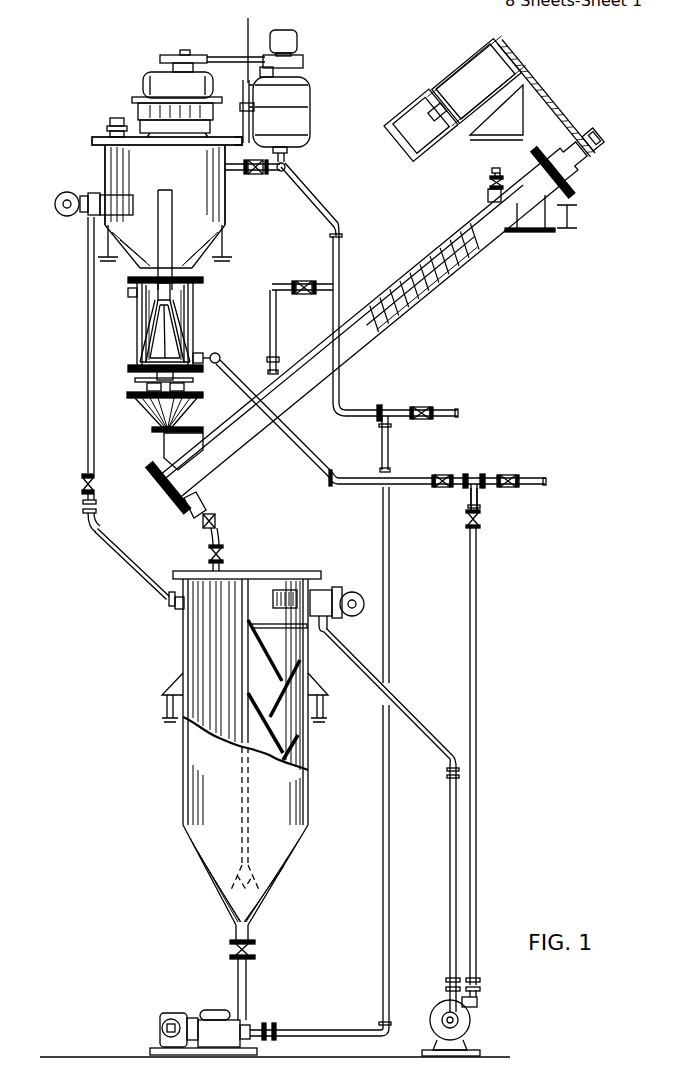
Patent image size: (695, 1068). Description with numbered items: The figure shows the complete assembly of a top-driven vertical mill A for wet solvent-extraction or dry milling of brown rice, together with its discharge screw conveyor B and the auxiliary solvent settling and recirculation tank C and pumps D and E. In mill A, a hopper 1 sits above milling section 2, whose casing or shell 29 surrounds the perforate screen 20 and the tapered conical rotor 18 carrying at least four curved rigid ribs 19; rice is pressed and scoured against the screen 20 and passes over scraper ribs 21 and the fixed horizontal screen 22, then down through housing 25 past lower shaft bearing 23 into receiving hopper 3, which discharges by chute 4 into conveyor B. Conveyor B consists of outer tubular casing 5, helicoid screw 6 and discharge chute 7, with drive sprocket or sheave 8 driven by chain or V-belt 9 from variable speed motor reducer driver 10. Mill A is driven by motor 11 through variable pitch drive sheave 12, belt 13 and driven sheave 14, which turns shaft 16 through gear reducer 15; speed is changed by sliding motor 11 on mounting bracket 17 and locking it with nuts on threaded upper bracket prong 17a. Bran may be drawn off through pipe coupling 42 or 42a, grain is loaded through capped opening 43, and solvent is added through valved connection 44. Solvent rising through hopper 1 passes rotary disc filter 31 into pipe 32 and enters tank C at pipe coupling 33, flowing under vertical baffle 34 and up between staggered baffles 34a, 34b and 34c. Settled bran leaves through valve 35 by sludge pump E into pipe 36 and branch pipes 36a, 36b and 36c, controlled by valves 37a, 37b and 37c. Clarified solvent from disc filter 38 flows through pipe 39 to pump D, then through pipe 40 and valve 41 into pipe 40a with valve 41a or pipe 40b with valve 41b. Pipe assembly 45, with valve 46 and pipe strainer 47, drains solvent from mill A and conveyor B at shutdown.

The hopper 1 is at (227, 218).
The milling section 2 is at (186, 297).
The receiving hopper 3 is at (197, 411).
The chute 4 is at (163, 441).
The outer tubular casing 5 is at (442, 250).
The helicoid screw 6 is at (453, 264).
The discharge chute 7 is at (535, 226).
The drive sprocket or sheave 8 is at (605, 142).
The chain or V-belt 9 is at (565, 112).
The variable speed motor reducer driver 10 is at (445, 70).
The motor 11 is at (312, 103).
The variable pitch drive sheave 12 is at (300, 55).
The belt 13 is at (240, 57).
The driven sheave 14 is at (178, 53).
The gear reducer 15 is at (143, 82).
The shaft 16 is at (134, 194).
The mounting bracket 17 is at (242, 88).
The threaded upper bracket prong 17a is at (248, 20).
The tapered conical rotor 18 is at (137, 346).
The curved rigid ribs 19 is at (180, 312).
The perforate screen 20 is at (186, 332).
The scraper ribs 21 is at (137, 378).
The horizontal screen 22 is at (196, 381).
The lower shaft bearing 23 is at (143, 404).
The housing 25 is at (130, 396).
The casing or shell 29 is at (137, 322).
The rotary disc filter 31 is at (57, 200).
The pipe 32 is at (88, 362).
The pipe coupling 33 is at (173, 609).
The vertical baffle 34 is at (242, 645).
The staggered baffle 34a is at (284, 682).
The staggered baffle 34b is at (300, 690).
The staggered baffle 34c is at (270, 612).
The valve 35 is at (258, 948).
The pipe 36 is at (390, 872).
The branch pipe 36a is at (405, 410).
The branch pipe 36b is at (318, 282).
The branch pipe 36c is at (310, 203).
The valve 37a is at (425, 408).
The valve 37b is at (305, 296).
The valve 37c is at (256, 175).
The disc filter 38 is at (335, 590).
The pipe 39 is at (404, 711).
The pipe 40 is at (478, 702).
The pipe 40a is at (491, 452).
The pipe 40b is at (468, 500).
The valve 41 is at (480, 517).
The valve 41a is at (510, 474).
The valve 41b is at (442, 474).
The pipe coupling 42 is at (207, 355).
The pipe coupling 42a is at (132, 296).
The capped opening 43 is at (108, 127).
The valved connection 44 is at (490, 181).
The pipe assembly 45 is at (217, 520).
The valve 46 is at (222, 556).
The pipe strainer 47 is at (185, 510).
The top-driven vertical mill A is at (103, 153).
The discharge screw conveyor B is at (355, 300).
The solvent settling and recirculation tank C is at (182, 655).
The pump D is at (472, 1026).
The sludge pump E is at (200, 1012).